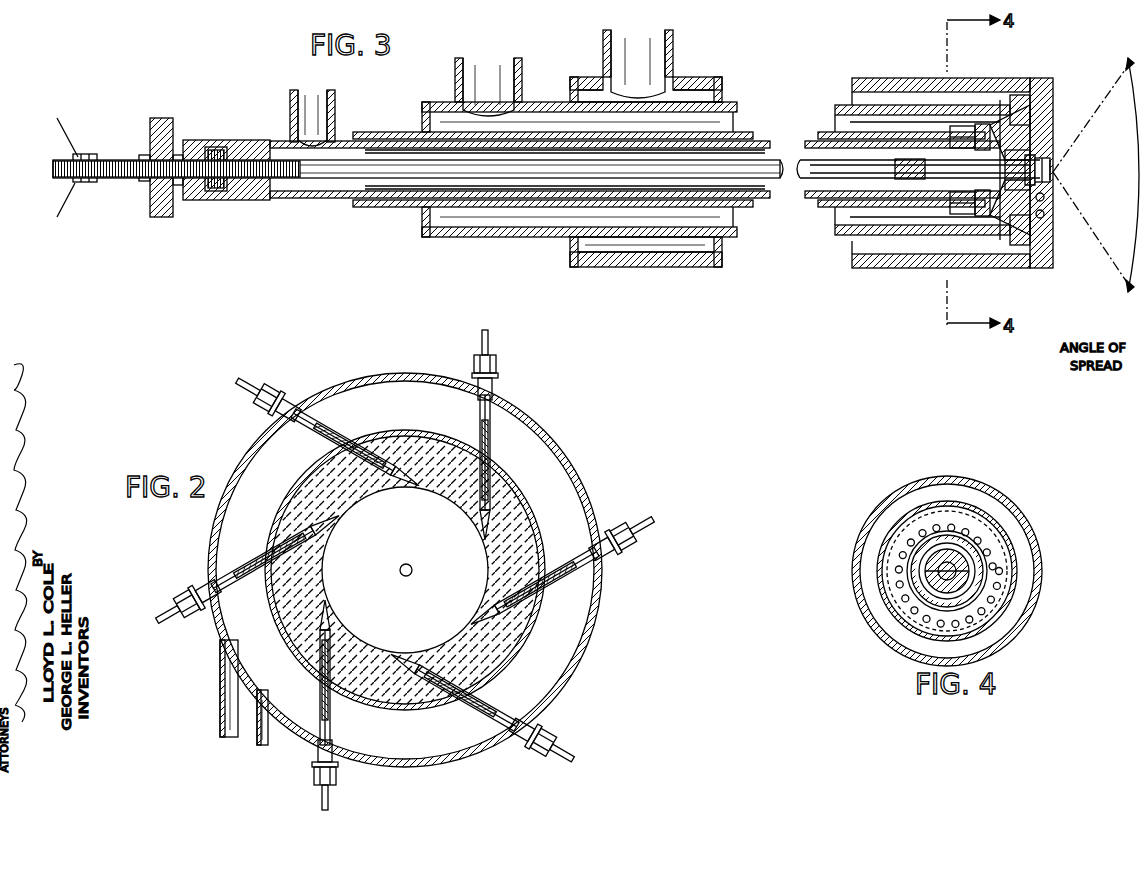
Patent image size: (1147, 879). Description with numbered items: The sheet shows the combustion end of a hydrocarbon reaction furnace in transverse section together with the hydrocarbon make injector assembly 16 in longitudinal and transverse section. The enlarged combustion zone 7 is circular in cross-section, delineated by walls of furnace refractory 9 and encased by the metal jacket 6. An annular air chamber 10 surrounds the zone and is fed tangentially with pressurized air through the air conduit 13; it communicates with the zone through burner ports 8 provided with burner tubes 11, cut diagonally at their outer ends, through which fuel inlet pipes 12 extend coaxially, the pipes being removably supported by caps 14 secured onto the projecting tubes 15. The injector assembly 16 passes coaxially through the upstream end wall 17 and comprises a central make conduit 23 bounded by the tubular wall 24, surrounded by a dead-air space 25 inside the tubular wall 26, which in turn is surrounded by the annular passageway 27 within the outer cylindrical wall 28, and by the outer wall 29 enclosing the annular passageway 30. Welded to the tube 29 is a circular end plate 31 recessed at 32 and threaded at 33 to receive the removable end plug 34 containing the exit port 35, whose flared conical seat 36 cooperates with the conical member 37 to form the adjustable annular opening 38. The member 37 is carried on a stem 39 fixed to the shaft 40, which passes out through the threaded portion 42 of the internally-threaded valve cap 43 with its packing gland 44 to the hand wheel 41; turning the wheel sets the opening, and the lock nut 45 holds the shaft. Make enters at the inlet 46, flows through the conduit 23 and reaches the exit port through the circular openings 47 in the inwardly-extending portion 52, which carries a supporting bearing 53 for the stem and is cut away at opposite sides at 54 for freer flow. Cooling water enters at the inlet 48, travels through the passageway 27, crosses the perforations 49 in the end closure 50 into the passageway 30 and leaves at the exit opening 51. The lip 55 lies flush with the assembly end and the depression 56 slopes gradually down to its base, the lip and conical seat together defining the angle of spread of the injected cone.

In FIG. 2, the metal jacket 6 is at (393, 436).
In FIG. 2, the combustion zone 7 is at (410, 537).
In FIG. 2, the burner ports 8 is at (420, 467).
In FIG. 2, the furnace refractory 9 is at (447, 442).
In FIG. 2, the annular air chamber 10 is at (540, 452).
In FIG. 2, the burner tubes 11 is at (276, 551).
In FIG. 2, the fuel inlet pipes 12 is at (208, 591).
In FIG. 2, the air conduit 13 is at (235, 737).
In FIG. 2, the caps 14 is at (168, 615).
In FIG. 2, the projecting tubes 15 is at (188, 602).
In FIG. 2, the hydrocarbon make injector assembly 16 is at (408, 575).
In FIG. 2, the upstream end wall 17 is at (434, 724).
In FIG. 3, the make conduit 23 is at (285, 196).
In FIG. 3, the tubular wall 24 is at (318, 199).
In FIG. 4, the tubular wall 24 is at (966, 540).
In FIG. 3, the dead-air space 25 is at (366, 199).
In FIG. 4, the dead-air space 25 is at (940, 546).
In FIG. 3, the tubular wall 26 is at (406, 208).
In FIG. 4, the tubular wall 26 is at (988, 548).
In FIG. 3, the annular passageway 27 is at (480, 225).
In FIG. 4, the annular passageway 27 is at (1005, 555).
In FIG. 3, the outer cylindrical wall 28 is at (530, 238).
In FIG. 4, the outer cylindrical wall 28 is at (905, 520).
In FIG. 3, the outer wall 29 is at (646, 255).
In FIG. 4, the outer wall 29 is at (1020, 556).
In FIG. 3, the annular passageway 30 is at (700, 252).
In FIG. 4, the annular passageway 30 is at (1020, 562).
In FIG. 3, the circular end plate 31 is at (1045, 80).
In FIG. 3, the recess 32 is at (1035, 100).
In FIG. 3, the threads 33 is at (1025, 118).
In FIG. 3, the end plug 34 is at (1040, 138).
In FIG. 3, the exit port 35 is at (1040, 158).
In FIG. 3, the conical seat 36 is at (1052, 170).
In FIG. 3, the conical member 37 is at (1052, 180).
In FIG. 3, the adjustable annular opening 38 is at (1040, 205).
In FIG. 3, the stem 39 is at (1030, 232).
In FIG. 4, the stem 39 is at (1005, 583).
In FIG. 3, the shaft 40 is at (798, 182).
In FIG. 3, the hand wheel 41 is at (77, 152).
In FIG. 3, the threaded portion 42 is at (252, 150).
In FIG. 3, the valve cap 43 is at (222, 148).
In FIG. 3, the packing gland 44 is at (210, 150).
In FIG. 3, the lock nut 45 is at (143, 155).
In FIG. 3, the inlet 46 is at (312, 108).
In FIG. 3, the circular openings 47 is at (1005, 128).
In FIG. 3, the inlet 48 is at (492, 62).
In FIG. 3, the perforations 49 is at (960, 122).
In FIG. 4, the perforations 49 is at (1000, 600).
In FIG. 3, the end closure 50 is at (962, 212).
In FIG. 3, the exit opening 51 is at (636, 35).
In FIG. 3, the inwardly-extending portion 52 is at (920, 195).
In FIG. 4, the inwardly-extending portion 52 is at (925, 577).
In FIG. 3, the supporting bearing 53 is at (880, 200).
In FIG. 4, the cut-away 54 is at (1015, 630).
In FIG. 3, the lip 55 is at (1046, 197).
In FIG. 3, the depression 56 is at (1046, 216).